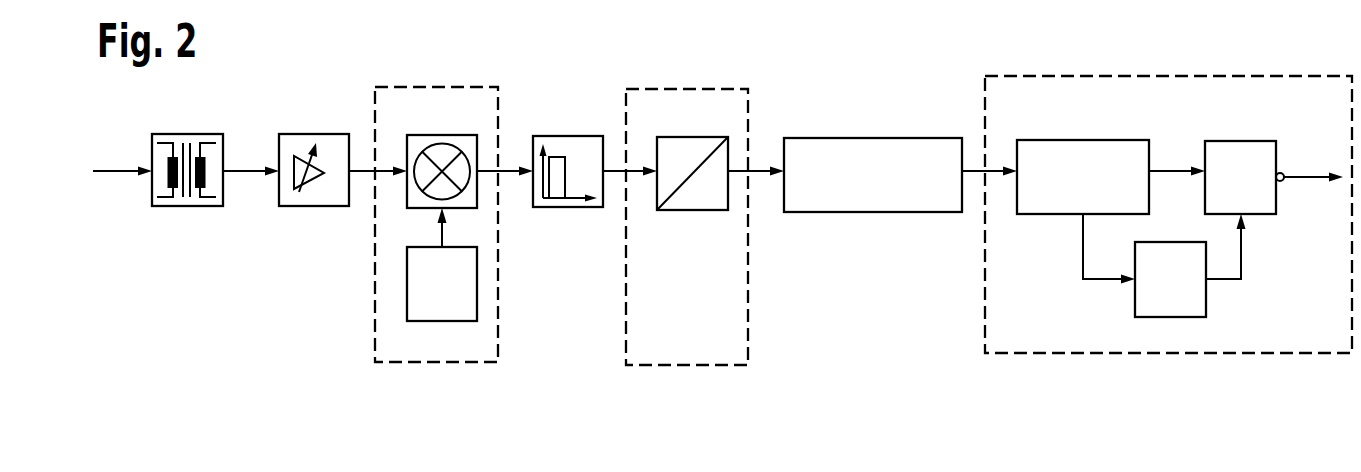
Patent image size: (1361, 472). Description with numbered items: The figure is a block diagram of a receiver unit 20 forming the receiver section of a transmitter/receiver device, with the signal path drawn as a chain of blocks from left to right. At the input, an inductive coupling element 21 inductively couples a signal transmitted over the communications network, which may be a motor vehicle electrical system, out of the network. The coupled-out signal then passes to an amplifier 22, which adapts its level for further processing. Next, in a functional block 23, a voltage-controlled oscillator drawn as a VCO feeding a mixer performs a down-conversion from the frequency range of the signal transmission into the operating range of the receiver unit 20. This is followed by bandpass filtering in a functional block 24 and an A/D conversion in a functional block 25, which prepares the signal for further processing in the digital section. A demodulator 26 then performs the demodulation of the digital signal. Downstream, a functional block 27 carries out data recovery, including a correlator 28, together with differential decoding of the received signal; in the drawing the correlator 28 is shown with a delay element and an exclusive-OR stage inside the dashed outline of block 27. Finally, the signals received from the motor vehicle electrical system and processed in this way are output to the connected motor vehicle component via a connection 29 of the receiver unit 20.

The receiver unit 20 is at (556, 53).
The inductive coupling element 21 is at (186, 207).
The amplifier 22 is at (316, 207).
The functional block 23 is at (443, 356).
The functional block 24 is at (568, 203).
The functional block 25 is at (687, 358).
The demodulator 26 is at (873, 200).
The functional block 27 is at (1168, 252).
The correlator 28 is at (1084, 147).
The connection 29 is at (1302, 182).